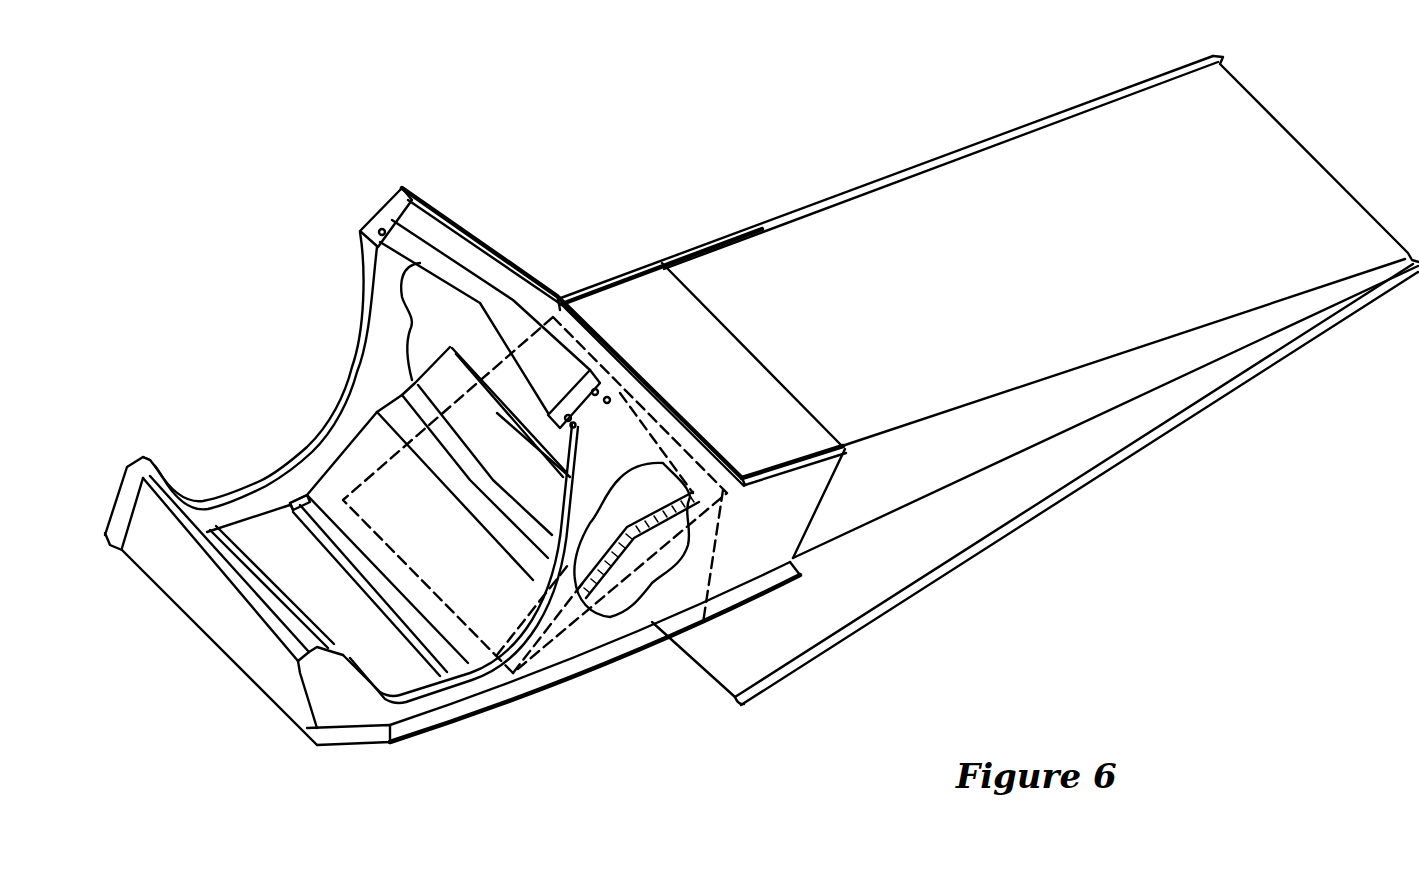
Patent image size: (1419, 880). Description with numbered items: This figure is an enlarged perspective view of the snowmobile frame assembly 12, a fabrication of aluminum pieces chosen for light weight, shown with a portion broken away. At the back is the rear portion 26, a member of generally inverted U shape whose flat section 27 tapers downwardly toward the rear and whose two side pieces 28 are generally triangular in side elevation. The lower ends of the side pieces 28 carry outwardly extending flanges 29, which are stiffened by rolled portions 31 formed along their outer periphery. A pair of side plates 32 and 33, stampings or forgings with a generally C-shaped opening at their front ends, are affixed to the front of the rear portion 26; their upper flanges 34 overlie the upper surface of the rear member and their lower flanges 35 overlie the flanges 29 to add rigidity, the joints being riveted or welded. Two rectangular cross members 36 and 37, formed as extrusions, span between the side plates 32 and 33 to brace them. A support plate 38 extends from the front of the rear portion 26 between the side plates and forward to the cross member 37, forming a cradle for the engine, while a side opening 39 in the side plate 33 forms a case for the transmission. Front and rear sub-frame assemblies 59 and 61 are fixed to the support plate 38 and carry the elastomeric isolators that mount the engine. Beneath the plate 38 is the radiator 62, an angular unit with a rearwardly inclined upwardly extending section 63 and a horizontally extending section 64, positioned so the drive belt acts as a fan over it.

The frame assembly 12 is at (922, 160).
The rear portion 26 is at (1162, 350).
The flat section 27 is at (1066, 248).
The side pieces 28 is at (890, 457).
The outwardly extending flanges 29 is at (957, 537).
The rolled portions 31 is at (1072, 483).
The side plate 32 is at (583, 645).
The side plate 33 is at (383, 373).
The flanges 34 is at (588, 297).
The lower flanges 35 is at (741, 602).
The cross member 36 is at (440, 247).
The cross member 37 is at (215, 622).
The support plate 38 is at (407, 670).
The side opening 39 is at (410, 315).
The front sub-frame assembly 59 is at (345, 467).
The rear sub-frame assembly 61 is at (237, 563).
The radiator 62 is at (640, 560).
The upwardly extending section 63 is at (612, 592).
The horizontally extending section 64 is at (684, 540).